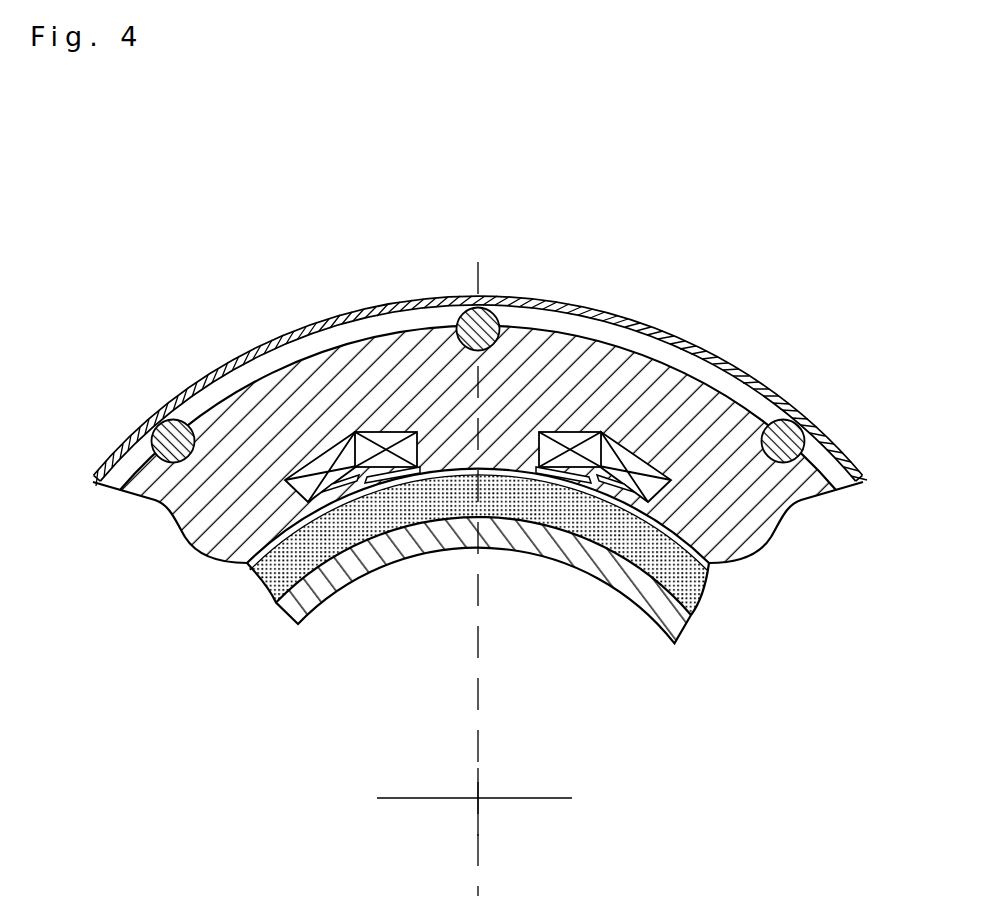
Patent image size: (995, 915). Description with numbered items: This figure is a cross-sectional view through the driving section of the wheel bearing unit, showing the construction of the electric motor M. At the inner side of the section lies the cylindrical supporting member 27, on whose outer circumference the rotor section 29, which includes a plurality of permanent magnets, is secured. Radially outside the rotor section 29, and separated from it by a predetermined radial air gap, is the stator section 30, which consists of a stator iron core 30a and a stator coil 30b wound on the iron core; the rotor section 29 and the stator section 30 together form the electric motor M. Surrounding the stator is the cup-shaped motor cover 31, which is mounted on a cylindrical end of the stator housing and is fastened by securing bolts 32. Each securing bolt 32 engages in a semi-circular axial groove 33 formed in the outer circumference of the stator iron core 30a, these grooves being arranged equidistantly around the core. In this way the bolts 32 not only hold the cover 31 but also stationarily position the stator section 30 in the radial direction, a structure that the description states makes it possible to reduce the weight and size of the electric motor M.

The supporting member 27 is at (297, 620).
The rotor section 29 is at (264, 582).
The stator section 30 is at (478, 432).
The stator iron core 30a is at (277, 447).
The stator coil 30b is at (357, 427).
The motor cover 31 is at (619, 318).
The securing bolt 32 is at (482, 311).
The semi-circular axial groove 33 is at (768, 448).
The electric motor M is at (745, 590).